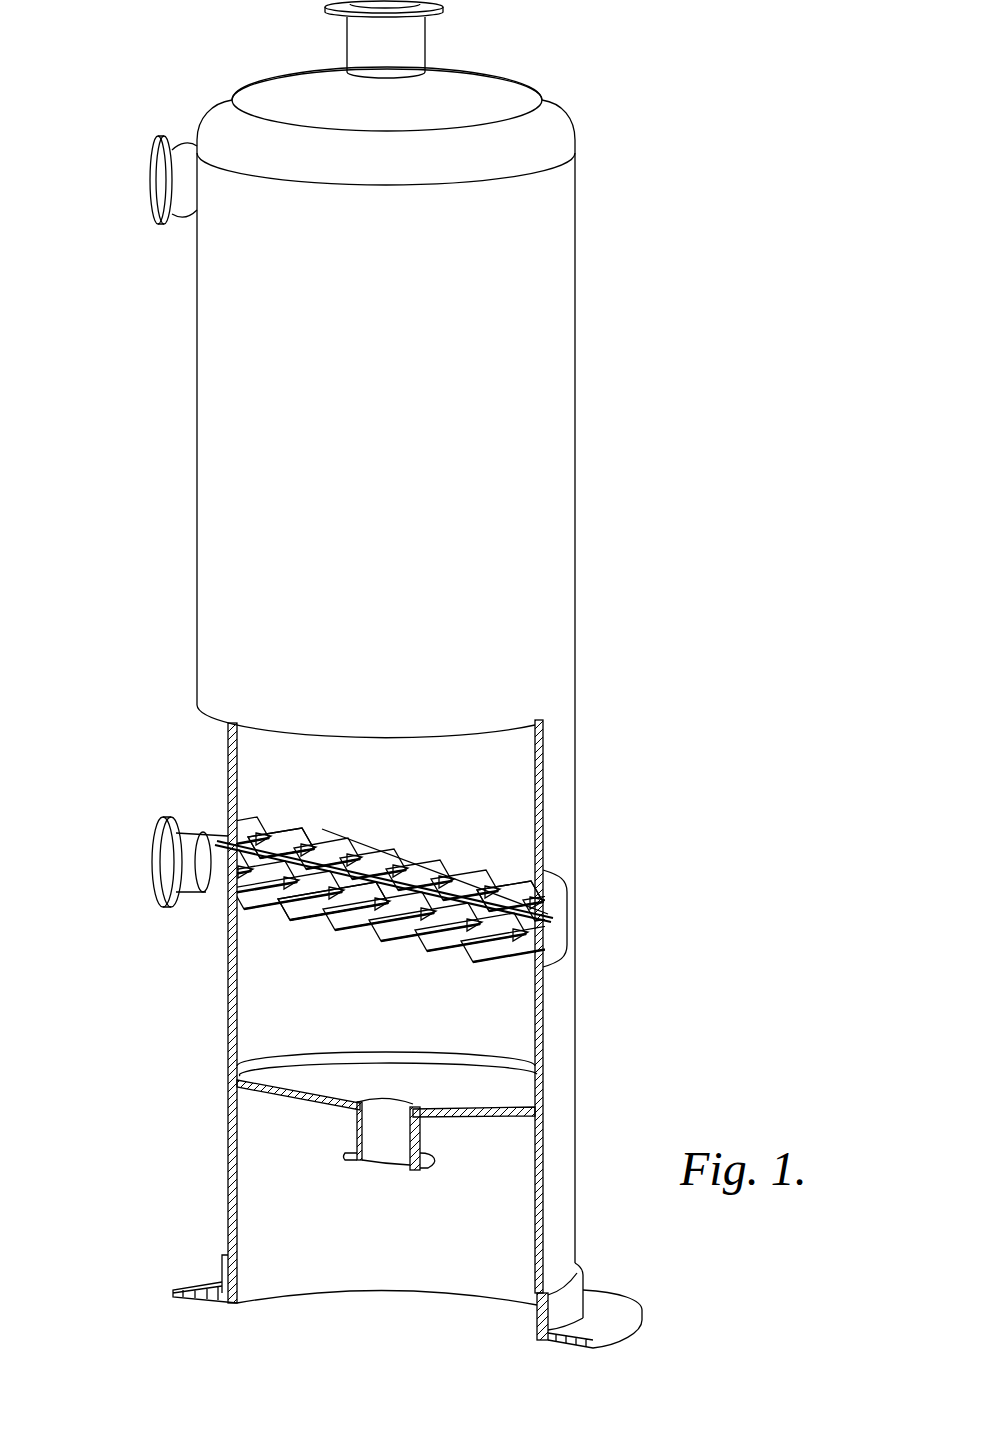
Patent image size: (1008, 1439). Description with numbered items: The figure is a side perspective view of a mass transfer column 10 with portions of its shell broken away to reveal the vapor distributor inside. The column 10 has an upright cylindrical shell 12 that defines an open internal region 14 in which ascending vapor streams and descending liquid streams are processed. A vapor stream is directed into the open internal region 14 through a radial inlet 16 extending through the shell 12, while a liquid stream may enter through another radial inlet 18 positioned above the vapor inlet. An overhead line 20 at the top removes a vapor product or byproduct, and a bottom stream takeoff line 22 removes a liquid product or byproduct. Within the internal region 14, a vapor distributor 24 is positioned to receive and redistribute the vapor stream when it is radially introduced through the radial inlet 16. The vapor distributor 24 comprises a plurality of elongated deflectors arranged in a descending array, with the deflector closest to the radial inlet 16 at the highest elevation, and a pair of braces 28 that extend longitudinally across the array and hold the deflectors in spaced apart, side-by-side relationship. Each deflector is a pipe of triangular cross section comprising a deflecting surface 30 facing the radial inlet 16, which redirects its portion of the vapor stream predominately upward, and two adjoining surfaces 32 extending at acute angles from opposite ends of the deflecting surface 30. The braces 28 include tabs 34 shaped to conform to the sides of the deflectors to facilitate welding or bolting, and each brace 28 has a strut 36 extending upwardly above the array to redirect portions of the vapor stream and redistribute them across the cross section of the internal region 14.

The mass transfer column 10 is at (583, 367).
The upright cylindrical shell 12 is at (543, 748).
The open internal region 14 is at (498, 758).
The radial inlet 16 is at (222, 838).
The radial inlet 18 is at (183, 195).
The overhead line 20 is at (415, 50).
The bottom stream takeoff line 22 is at (388, 1147).
The vapor distributor 24 is at (393, 837).
The brace 28 is at (567, 932).
The deflecting surface 30 is at (343, 950).
The adjoining surfaces 32 is at (368, 945).
The tabs 34 is at (338, 860).
The strut 36 is at (277, 862).